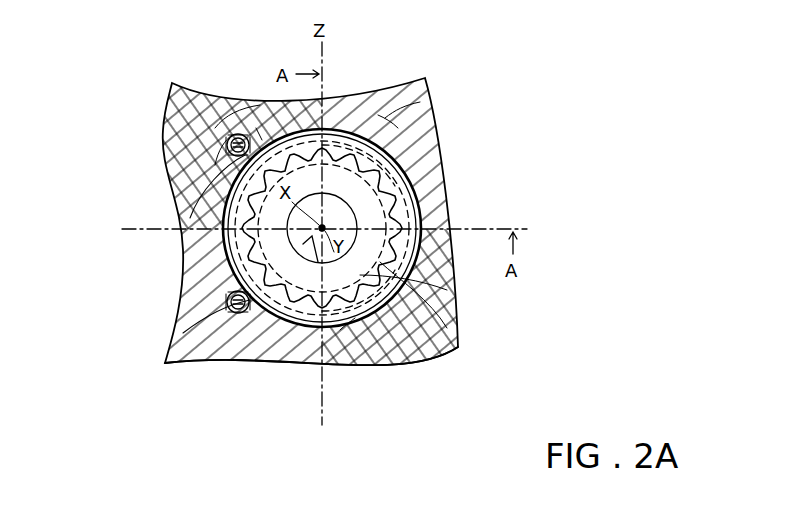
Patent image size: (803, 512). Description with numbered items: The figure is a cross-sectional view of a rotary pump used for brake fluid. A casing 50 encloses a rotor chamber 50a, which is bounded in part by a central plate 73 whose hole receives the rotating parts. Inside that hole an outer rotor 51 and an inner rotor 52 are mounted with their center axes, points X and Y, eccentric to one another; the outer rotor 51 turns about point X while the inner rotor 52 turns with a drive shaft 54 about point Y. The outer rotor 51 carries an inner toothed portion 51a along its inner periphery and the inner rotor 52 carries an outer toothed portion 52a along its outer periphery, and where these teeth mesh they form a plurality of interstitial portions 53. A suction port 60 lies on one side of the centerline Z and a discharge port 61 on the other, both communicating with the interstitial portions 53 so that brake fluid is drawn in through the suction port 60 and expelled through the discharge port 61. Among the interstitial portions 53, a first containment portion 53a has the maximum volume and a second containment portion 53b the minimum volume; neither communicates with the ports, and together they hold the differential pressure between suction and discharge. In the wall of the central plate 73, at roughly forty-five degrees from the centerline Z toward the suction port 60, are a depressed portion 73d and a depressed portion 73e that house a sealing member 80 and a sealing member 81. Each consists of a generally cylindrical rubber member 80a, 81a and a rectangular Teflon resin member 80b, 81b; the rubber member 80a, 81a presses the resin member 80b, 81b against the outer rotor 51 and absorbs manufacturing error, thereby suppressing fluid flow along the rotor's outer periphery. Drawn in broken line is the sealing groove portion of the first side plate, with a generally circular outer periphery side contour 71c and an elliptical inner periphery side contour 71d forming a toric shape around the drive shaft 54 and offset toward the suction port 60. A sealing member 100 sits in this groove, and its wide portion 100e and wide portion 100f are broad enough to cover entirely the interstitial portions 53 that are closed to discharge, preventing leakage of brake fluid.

The casing 50 is at (433, 148).
The rotor chamber 50a is at (256, 128).
The outer rotor 51 is at (226, 180).
The inner toothed portion 51a is at (232, 197).
The inner rotor 52 is at (450, 350).
The outer toothed portion 52a is at (447, 328).
The interstitial portions 53 is at (400, 190).
The first containment portion 53a is at (398, 128).
The second containment portion 53b is at (340, 330).
The drive shaft 54 is at (316, 262).
The suction port 60 is at (220, 224).
The discharge port 61 is at (447, 290).
The outer periphery side contour 71c is at (215, 165).
The inner periphery side contour 71d is at (215, 128).
The central plate 73 is at (420, 102).
The depressed portion 73d is at (240, 134).
The depressed portion 73e is at (226, 300).
The sealing member 80 is at (157, 79).
The rubber member 80a is at (238, 140).
The resin member 80b is at (240, 138).
The sealing member 81 is at (205, 370).
The rubber member 81a is at (232, 306).
The resin member 81b is at (245, 315).
The sealing member 100 is at (205, 152).
The wide portion 100e is at (360, 125).
The wide portion 100f is at (395, 330).